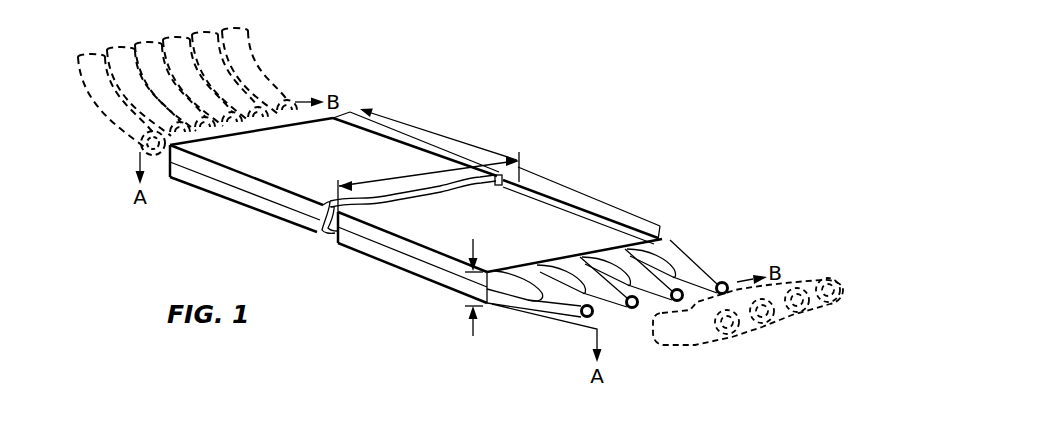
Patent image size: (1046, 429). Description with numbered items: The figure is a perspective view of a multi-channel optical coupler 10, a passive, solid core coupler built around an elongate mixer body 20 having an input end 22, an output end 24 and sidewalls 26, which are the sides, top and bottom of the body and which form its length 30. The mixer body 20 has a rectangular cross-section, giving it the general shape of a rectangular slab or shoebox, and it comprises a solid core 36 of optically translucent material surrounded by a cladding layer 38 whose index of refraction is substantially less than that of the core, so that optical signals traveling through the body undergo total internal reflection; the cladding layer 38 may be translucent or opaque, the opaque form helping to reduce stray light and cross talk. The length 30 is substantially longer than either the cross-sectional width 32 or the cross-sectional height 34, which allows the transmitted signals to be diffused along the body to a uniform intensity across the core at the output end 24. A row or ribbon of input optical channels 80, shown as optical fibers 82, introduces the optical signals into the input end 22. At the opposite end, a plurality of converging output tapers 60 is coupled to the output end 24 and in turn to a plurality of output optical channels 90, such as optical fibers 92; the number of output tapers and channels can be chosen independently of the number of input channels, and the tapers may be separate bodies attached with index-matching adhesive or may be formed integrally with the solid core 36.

The multi-channel optical coupler 10 is at (618, 105).
The elongate mixer body 20 is at (536, 176).
The input end 22 is at (345, 113).
The output end 24 is at (660, 232).
The sidewalls 26 is at (227, 187).
The length 30 is at (617, 203).
The cross-sectional width 32 is at (472, 153).
The cross-sectional height 34 is at (473, 334).
The solid core 36 is at (330, 202).
The cladding layer 38 is at (307, 228).
The converging output tapers 60 is at (533, 312).
The input optical channels 80 is at (263, 77).
The optical fibers 82 is at (147, 140).
The output optical channels 90 is at (673, 345).
The optical fibers 92 is at (772, 314).